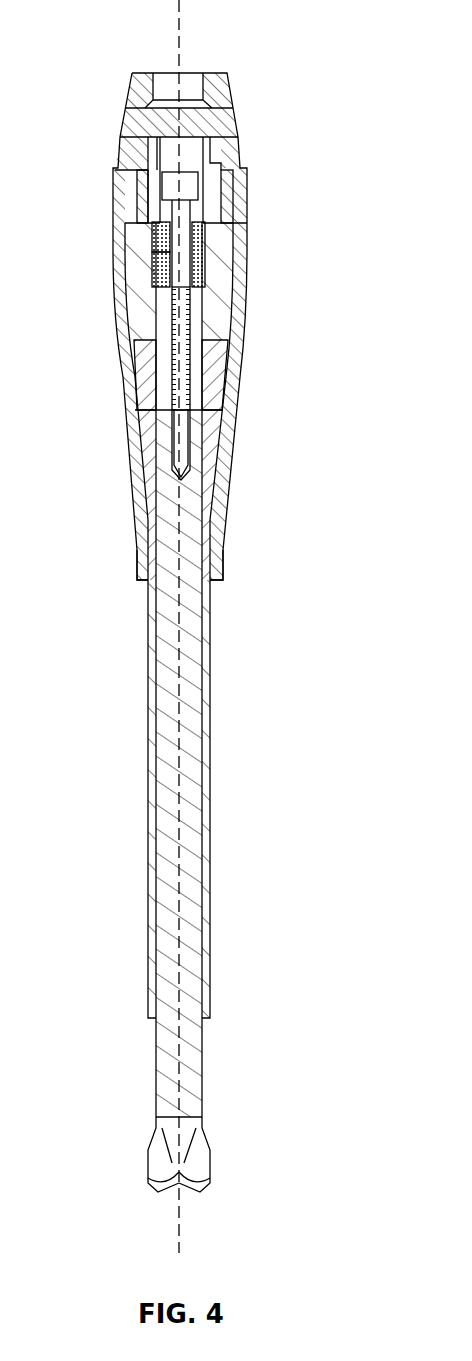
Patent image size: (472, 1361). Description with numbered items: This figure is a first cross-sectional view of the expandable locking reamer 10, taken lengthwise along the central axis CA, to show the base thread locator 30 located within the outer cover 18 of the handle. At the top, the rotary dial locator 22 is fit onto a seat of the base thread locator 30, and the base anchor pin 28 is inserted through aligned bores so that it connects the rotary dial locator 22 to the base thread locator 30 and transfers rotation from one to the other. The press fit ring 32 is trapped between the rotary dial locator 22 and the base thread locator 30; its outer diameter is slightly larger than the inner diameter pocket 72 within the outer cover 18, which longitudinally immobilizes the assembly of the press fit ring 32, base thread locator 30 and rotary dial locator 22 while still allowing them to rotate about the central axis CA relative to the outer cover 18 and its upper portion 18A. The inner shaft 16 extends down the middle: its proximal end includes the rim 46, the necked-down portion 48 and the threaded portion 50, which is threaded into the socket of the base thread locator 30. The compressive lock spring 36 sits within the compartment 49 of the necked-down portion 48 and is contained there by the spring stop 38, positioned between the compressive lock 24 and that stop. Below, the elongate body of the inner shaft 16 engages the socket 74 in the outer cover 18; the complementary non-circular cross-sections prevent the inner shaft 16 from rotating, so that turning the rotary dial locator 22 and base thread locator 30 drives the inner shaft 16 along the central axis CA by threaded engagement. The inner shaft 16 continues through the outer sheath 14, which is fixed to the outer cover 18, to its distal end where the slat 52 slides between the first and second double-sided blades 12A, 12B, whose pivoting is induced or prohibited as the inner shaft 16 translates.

The central axis CA is at (180, 30).
The expandable locking reamer 10 is at (258, 122).
The first double-sided blade 12A is at (170, 1160).
The second double-sided blade 12B is at (203, 1153).
The outer sheath 14 is at (203, 605).
The inner shaft 16 is at (180, 738).
The outer cover 18 is at (217, 558).
The upper portion of outer cover 18A is at (243, 223).
The rotary dial locator 22 is at (150, 92).
The compressive lock 24 is at (183, 438).
The base anchor pin 28 is at (132, 133).
The base thread locator 30 is at (235, 257).
The press fit ring 32 is at (130, 203).
The compressive lock spring 36 is at (178, 330).
The spring stop 38 is at (150, 168).
The rim 46 is at (215, 192).
The necked-down portion 48 is at (153, 275).
The compartment 49 is at (155, 247).
The threaded portion 50 is at (205, 300).
The slat 52 is at (178, 1100).
The inner diameter pocket 72 is at (147, 400).
The socket 74 is at (150, 445).